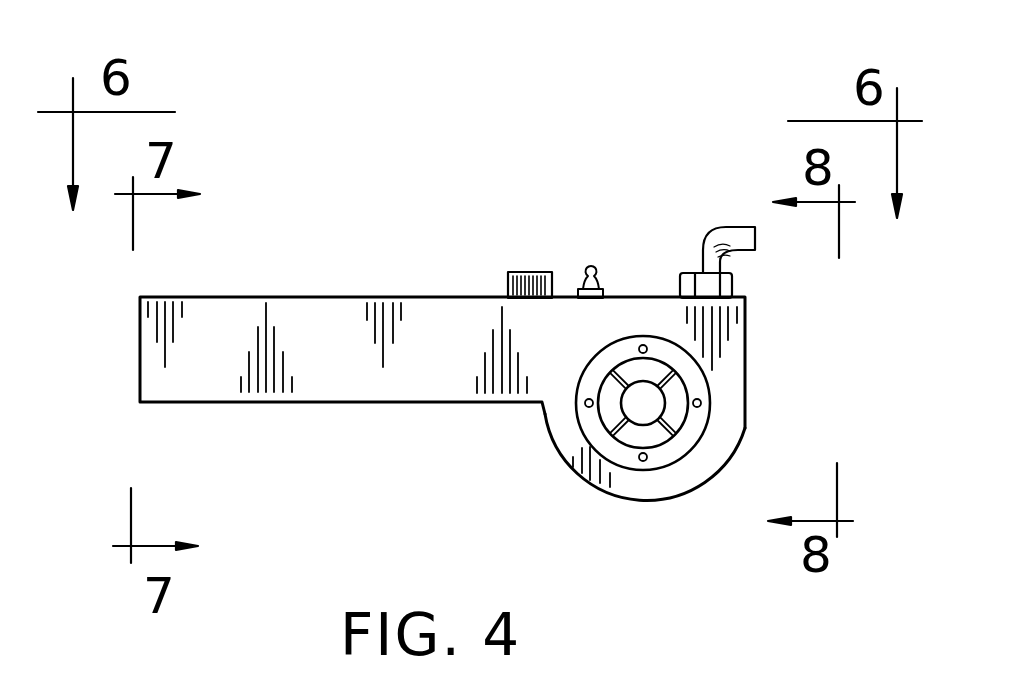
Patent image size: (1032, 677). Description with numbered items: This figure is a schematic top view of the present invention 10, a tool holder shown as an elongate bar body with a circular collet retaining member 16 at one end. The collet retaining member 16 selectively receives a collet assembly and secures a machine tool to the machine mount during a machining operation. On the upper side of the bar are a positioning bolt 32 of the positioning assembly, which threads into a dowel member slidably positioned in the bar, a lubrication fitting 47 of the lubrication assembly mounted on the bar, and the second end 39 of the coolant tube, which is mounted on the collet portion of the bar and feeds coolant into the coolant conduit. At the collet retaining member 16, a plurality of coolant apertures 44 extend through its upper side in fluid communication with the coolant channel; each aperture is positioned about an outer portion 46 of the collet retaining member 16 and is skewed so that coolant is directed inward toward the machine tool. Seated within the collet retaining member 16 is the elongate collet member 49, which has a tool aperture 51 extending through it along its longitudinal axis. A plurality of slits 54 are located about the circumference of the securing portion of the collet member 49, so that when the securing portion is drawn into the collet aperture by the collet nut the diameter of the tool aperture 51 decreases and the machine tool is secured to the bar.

The vacuum cleaner / blower unit 10 is at (312, 447).
The collet retaining member 16 is at (608, 480).
The positioning bolt 32 is at (530, 272).
The second end 39 is at (703, 267).
The coolant apertures 44 is at (642, 461).
The outer portion 46 is at (601, 472).
The switch lever 47 is at (593, 267).
The collet member 49 is at (625, 455).
The tool aperture 51 is at (636, 397).
The slits 54 is at (600, 381).